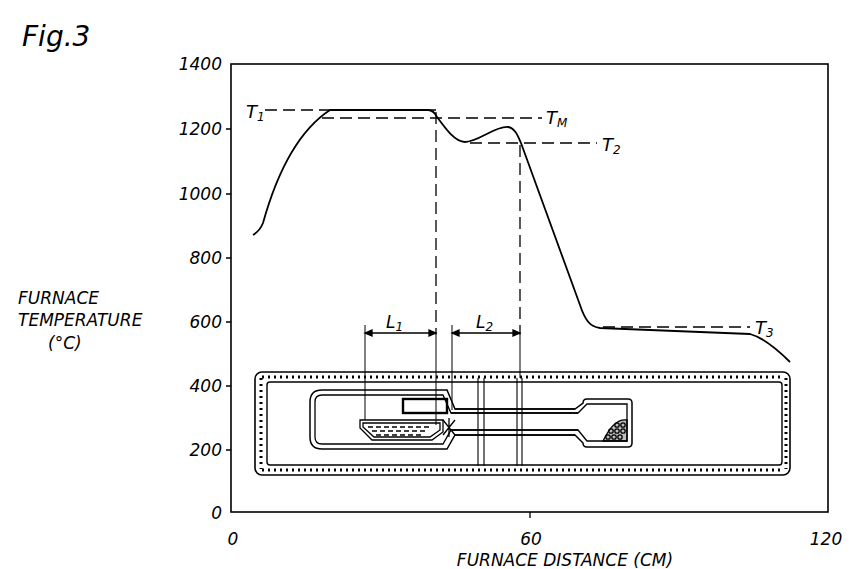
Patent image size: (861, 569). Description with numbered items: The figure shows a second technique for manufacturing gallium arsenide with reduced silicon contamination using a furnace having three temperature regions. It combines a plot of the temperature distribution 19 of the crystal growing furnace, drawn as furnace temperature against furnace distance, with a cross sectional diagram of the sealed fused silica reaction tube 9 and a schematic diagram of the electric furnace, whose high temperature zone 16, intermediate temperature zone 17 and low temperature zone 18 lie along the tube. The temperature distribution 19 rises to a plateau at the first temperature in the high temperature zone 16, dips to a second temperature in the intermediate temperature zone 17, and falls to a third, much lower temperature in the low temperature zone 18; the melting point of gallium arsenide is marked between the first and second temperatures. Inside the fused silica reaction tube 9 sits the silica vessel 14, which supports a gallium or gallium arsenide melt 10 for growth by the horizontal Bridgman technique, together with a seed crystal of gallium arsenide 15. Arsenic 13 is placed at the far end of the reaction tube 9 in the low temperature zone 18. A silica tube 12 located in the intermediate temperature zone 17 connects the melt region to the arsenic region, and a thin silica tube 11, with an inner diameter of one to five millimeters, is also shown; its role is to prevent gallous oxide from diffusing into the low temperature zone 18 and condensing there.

The sealed fused silica reaction tube 9 is at (310, 400).
The gallium or gallium arsenide melt 10 is at (387, 425).
The thin silica tube 11 is at (417, 400).
The silica tube 12 is at (538, 405).
The arsenic 13 is at (626, 429).
The silica vessel 14 is at (362, 445).
The seed crystal of gallium arsenide 15 is at (455, 440).
The high temperature zone 16 is at (300, 443).
The intermediate temperature zone 17 is at (497, 450).
The low temperature zone 18 is at (690, 443).
The temperature distribution 19 is at (558, 233).